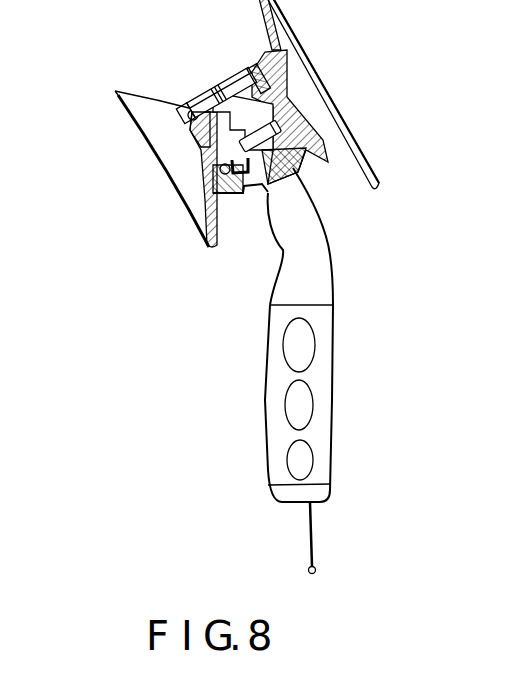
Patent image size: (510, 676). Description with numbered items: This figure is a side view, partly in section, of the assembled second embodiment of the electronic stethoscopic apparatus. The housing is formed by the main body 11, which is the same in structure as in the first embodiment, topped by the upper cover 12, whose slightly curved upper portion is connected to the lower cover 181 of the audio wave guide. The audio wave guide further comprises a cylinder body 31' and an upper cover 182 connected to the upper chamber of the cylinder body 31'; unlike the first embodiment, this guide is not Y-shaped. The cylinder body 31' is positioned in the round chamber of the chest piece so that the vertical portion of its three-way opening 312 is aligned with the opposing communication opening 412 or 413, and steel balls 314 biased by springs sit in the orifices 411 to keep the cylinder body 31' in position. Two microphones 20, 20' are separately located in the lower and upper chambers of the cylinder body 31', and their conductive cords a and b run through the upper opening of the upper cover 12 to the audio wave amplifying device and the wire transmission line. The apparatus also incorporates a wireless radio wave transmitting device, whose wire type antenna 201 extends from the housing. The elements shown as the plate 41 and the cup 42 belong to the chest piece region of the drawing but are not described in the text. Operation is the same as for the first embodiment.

The main body 11 is at (332, 382).
The upper cover 12 is at (330, 245).
The microphone 20 is at (252, 202).
The microphone 20' is at (252, 50).
The cylinder body 31' is at (216, 83).
The plate 41 is at (352, 125).
The suction cup 42 is at (115, 92).
The lower cover 181 is at (304, 165).
The upper cover 182 is at (226, 93).
The wire type antenna 201 is at (313, 534).
The three-way opening 312 is at (296, 88).
The steel ball 314 is at (177, 106).
The orifice 411 is at (192, 132).
The communication opening 412 is at (131, 152).
The communication opening 413 is at (200, 150).
The conductive cord a is at (258, 190).
The conductive cord b is at (220, 173).